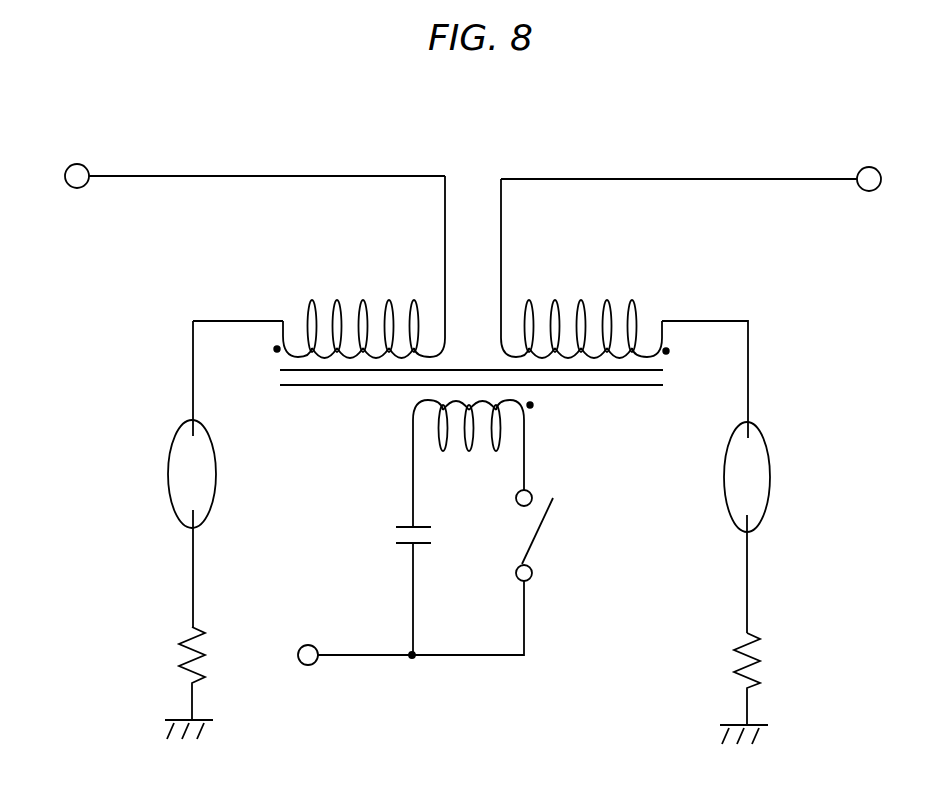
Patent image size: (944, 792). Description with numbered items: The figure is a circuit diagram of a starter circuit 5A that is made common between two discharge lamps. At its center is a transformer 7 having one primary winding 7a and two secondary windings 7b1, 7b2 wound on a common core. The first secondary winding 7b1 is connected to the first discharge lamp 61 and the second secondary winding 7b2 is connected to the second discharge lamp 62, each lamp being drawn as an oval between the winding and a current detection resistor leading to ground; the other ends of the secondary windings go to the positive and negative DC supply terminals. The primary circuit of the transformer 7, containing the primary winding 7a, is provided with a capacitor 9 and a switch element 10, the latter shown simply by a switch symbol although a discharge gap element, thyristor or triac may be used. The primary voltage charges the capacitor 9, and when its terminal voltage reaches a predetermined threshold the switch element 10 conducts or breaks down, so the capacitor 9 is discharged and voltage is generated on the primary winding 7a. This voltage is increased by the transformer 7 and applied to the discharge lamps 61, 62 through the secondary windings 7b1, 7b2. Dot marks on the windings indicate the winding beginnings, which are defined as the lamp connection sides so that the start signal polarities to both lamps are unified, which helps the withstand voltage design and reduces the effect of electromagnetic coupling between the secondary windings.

The starter circuit 5A is at (472, 451).
The transformer 7 is at (471, 351).
The primary winding 7a is at (527, 433).
The first secondary winding 7b1 is at (364, 300).
The second secondary winding 7b2 is at (583, 300).
The capacitor 9 is at (407, 524).
The switch element 10 is at (542, 532).
The first discharge lamp 61 is at (168, 475).
The second discharge lamp 62 is at (773, 476).